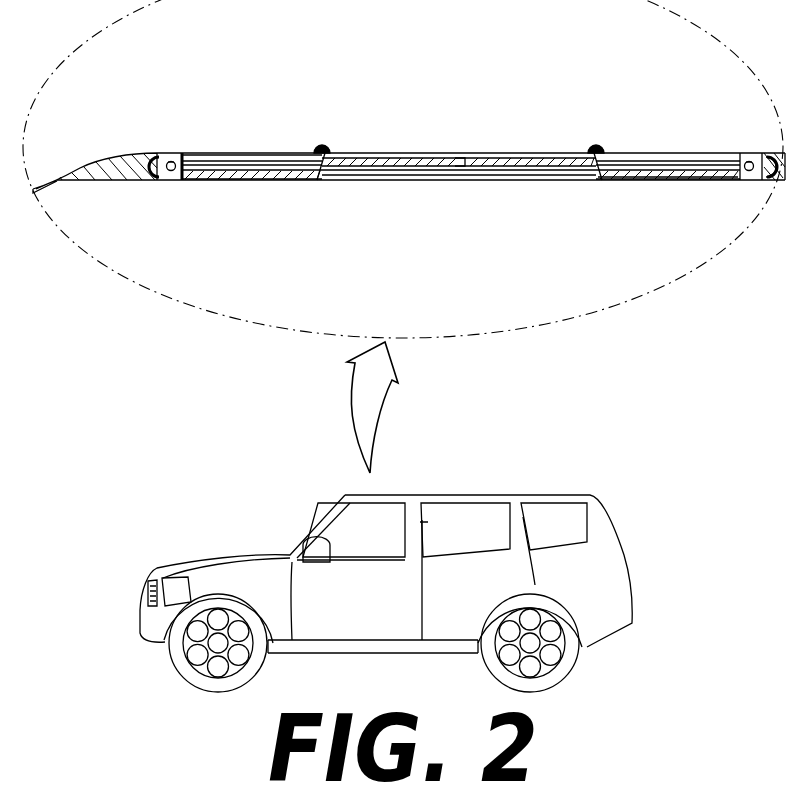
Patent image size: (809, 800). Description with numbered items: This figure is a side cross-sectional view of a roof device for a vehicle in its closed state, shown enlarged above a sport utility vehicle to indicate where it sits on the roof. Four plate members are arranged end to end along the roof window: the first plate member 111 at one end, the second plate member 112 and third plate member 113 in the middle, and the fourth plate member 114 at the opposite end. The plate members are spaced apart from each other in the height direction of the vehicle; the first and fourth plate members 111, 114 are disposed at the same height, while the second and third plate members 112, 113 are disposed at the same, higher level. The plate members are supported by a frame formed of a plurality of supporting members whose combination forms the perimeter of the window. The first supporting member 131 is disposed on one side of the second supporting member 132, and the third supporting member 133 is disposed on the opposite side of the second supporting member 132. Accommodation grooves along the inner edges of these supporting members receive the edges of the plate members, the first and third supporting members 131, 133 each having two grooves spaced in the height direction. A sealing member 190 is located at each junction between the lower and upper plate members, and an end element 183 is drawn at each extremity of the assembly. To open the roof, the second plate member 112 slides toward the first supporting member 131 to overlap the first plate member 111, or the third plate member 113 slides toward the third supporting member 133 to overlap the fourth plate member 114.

The first plate member 111 is at (233, 174).
The second plate member 112 is at (392, 163).
The third plate member 113 is at (521, 163).
The fourth plate member 114 is at (668, 172).
The first supporting member 131 is at (272, 154).
The second supporting member 132 is at (460, 172).
The third supporting member 133 is at (590, 181).
The fixing member 183 is at (748, 160).
The sealing member 190 is at (597, 148).